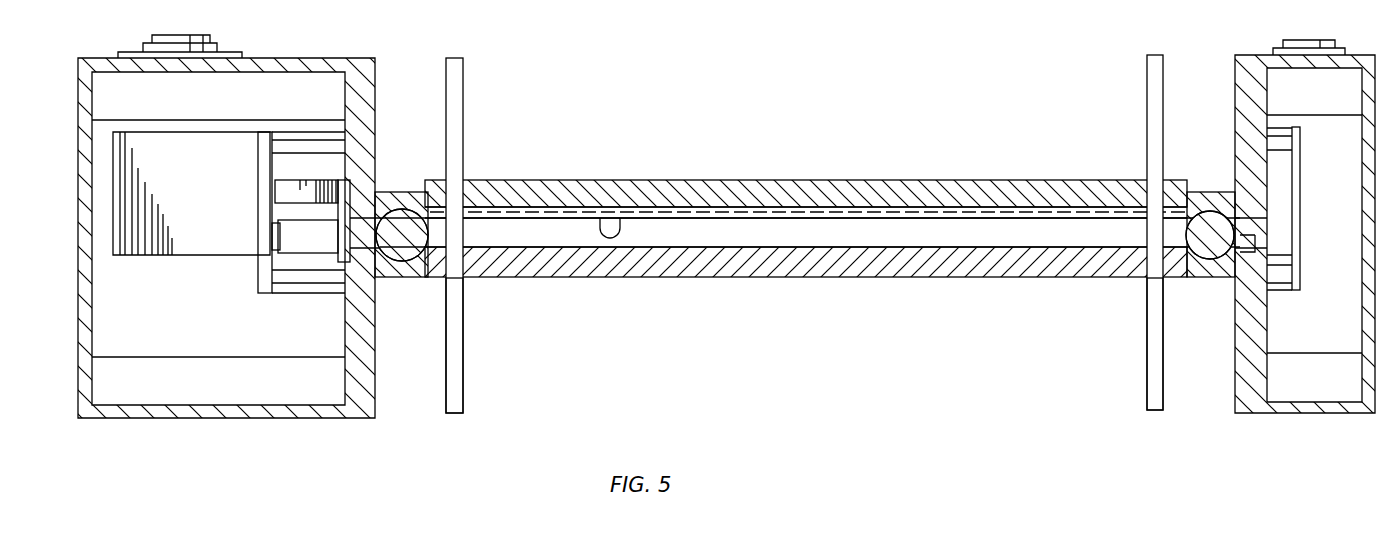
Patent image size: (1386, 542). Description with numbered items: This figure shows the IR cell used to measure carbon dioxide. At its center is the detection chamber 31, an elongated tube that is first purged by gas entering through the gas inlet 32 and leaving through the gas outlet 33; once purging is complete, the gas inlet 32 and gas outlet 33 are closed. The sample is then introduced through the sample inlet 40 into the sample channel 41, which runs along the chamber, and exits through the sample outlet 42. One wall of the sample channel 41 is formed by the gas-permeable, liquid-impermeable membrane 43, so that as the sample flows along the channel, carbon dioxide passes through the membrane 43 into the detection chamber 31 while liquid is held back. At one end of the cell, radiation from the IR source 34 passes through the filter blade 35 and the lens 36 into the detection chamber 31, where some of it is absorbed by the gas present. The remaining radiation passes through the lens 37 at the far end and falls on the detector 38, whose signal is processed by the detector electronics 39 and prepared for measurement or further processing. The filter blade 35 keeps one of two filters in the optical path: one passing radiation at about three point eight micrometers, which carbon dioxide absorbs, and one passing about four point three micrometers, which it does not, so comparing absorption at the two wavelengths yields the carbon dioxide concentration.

The detection chamber 31 is at (815, 235).
The gas inlet 32 is at (465, 348).
The gas outlet 33 is at (1146, 350).
The IR source 34 is at (318, 240).
The filter blade 35 is at (350, 195).
The lens 36 is at (402, 280).
The lens 37 is at (1208, 250).
The detector 38 is at (1262, 237).
The detector electronics 39 is at (1300, 178).
The sample inlet 40 is at (464, 98).
The sample channel 41 is at (522, 183).
The sample outlet 42 is at (1146, 93).
The gas-permeable, liquid-impermeable membrane 43 is at (612, 228).